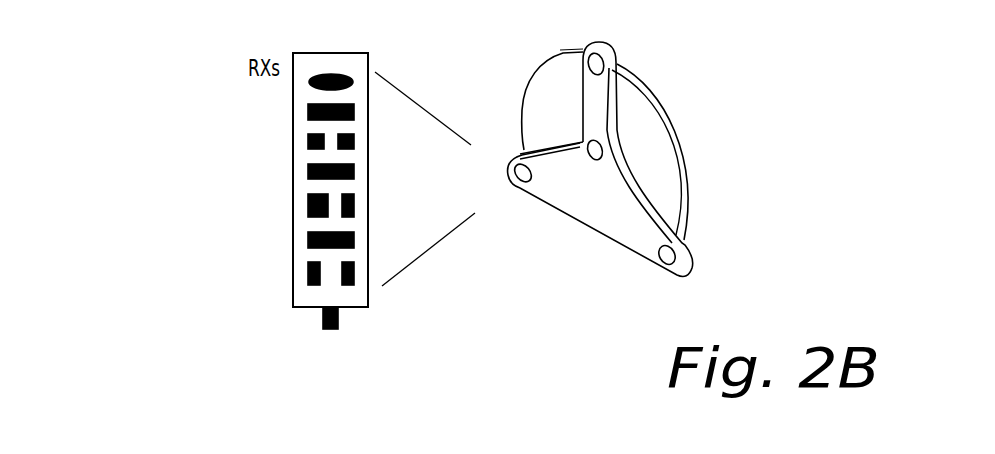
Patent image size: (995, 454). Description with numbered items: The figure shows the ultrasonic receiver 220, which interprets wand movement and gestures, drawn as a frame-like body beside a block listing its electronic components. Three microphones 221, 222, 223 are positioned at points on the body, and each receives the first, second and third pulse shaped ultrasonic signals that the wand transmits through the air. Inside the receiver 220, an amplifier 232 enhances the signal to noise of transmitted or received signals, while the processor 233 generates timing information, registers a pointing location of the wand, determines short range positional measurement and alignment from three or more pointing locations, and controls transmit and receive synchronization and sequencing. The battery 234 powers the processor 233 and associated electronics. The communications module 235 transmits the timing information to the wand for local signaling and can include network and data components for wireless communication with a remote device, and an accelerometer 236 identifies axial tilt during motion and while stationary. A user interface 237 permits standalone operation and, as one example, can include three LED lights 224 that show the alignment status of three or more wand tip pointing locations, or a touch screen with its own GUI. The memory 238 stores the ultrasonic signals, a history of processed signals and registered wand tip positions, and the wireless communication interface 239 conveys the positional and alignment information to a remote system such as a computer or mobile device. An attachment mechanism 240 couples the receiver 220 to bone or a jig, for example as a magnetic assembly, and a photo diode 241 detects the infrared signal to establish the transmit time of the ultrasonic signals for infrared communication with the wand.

The receiver 220 is at (793, 286).
The microphone 221 is at (590, 52).
The microphone 222 is at (668, 265).
The microphone 223 is at (514, 172).
The LED lights 224 is at (239, 337).
The amplifier 232 is at (275, 90).
The processor 233 is at (240, 118).
The battery 234 is at (237, 146).
The communications interface 235 is at (210, 159).
The accelerometer 236 is at (218, 187).
The user interface 237 is at (199, 215).
The memory 238 is at (257, 228).
The wireless communication interface 239 is at (223, 260).
The attachment mechanism 240 is at (216, 288).
The photo diode 241 is at (230, 301).